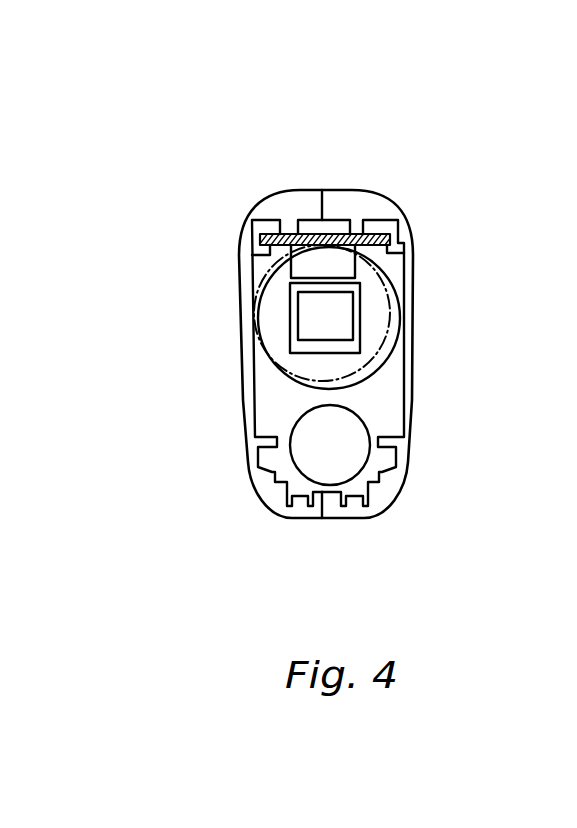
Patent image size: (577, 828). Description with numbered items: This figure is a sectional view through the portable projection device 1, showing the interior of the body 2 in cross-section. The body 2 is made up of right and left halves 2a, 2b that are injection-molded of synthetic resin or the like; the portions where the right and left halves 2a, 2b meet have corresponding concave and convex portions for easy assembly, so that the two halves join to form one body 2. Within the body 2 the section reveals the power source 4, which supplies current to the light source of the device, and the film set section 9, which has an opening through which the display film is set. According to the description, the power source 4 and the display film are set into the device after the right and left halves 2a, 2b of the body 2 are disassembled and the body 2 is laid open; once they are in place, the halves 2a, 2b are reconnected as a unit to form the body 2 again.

The portable projection device 1 is at (204, 327).
The body 2 is at (447, 103).
The right half 2a is at (287, 203).
The left half 2b is at (372, 207).
The power source 4 is at (323, 468).
The film set section 9 is at (343, 318).